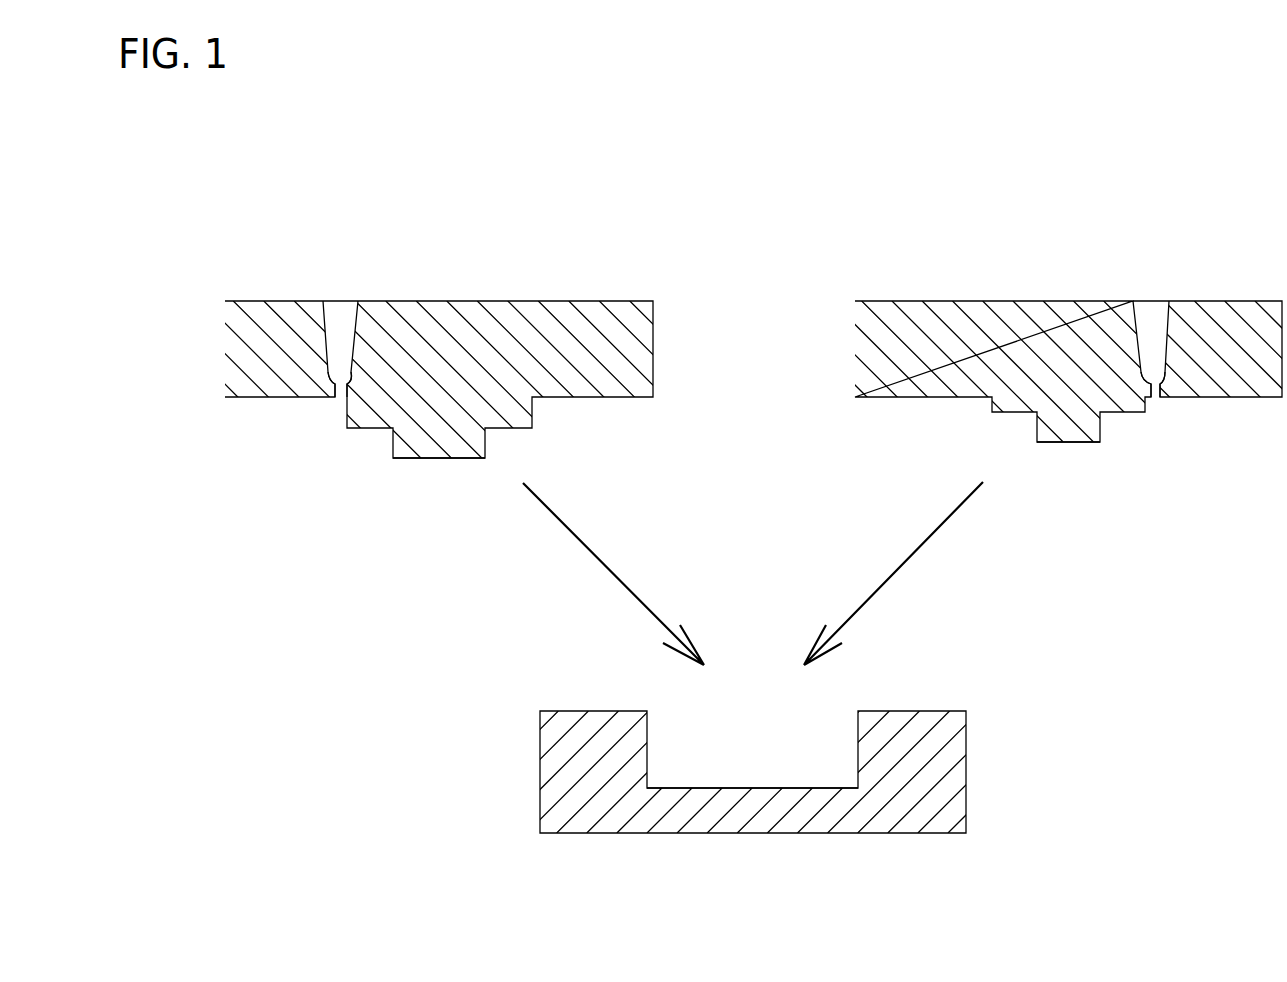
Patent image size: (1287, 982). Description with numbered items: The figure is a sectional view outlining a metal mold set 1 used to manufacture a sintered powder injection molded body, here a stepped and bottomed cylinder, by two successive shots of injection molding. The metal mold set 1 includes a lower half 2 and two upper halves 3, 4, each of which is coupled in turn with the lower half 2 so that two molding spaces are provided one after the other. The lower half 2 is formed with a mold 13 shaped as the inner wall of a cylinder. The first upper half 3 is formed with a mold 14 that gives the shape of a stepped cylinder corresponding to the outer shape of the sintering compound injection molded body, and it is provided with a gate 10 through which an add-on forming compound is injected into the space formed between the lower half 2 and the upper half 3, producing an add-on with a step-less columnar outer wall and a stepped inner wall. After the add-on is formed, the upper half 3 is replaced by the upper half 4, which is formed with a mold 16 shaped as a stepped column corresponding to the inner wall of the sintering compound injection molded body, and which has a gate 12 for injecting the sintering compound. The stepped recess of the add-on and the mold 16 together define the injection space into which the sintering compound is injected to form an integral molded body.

The metal mold set 1 is at (966, 157).
The lower half 2 is at (967, 772).
The upper half 3 is at (488, 302).
The upper half 4 is at (1213, 302).
The gate 10 is at (335, 388).
The gate 12 is at (1158, 386).
The mold 13 is at (767, 788).
The mold 14 is at (441, 460).
The mold 16 is at (1065, 442).